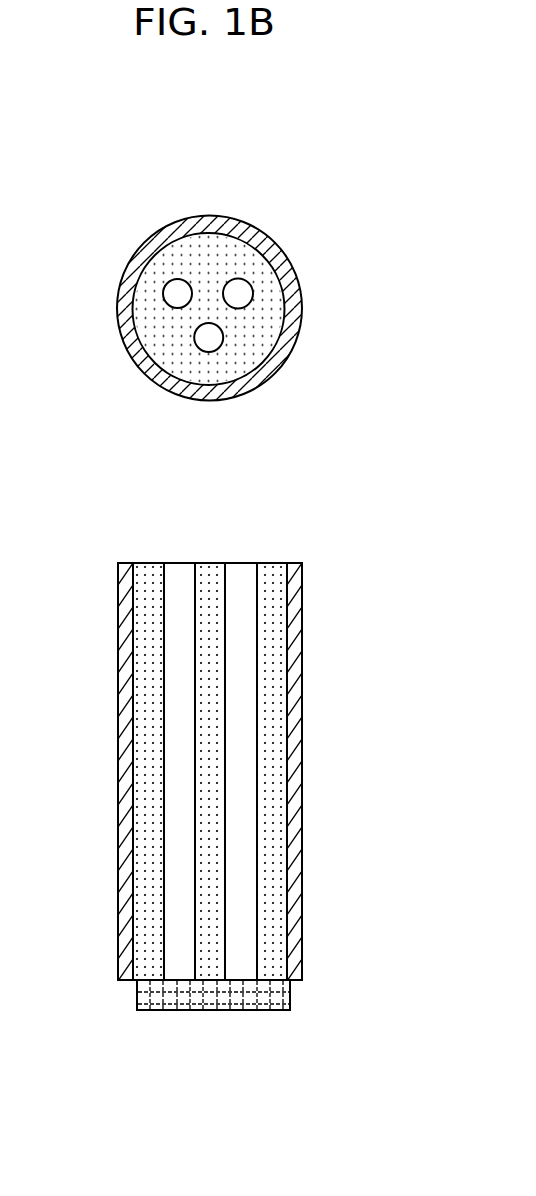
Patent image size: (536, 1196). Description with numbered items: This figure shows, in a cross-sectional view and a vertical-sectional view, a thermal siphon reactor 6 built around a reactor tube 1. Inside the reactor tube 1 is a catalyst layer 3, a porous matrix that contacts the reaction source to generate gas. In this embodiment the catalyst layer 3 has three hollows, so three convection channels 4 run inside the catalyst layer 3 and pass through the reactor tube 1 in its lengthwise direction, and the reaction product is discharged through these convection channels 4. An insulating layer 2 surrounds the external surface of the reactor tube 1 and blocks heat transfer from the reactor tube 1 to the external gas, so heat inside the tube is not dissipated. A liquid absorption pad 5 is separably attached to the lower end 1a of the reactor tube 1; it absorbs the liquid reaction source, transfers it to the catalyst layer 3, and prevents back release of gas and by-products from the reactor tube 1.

The reactor tube 1 is at (147, 362).
The lower end of the reactor tube 1a is at (301, 979).
The insulating layer 2 is at (130, 270).
The catalyst layer 3 is at (155, 327).
The convection channel 4 is at (164, 292).
The liquid absorption pad 5 is at (137, 993).
The thermal siphon reactor 6 is at (227, 610).